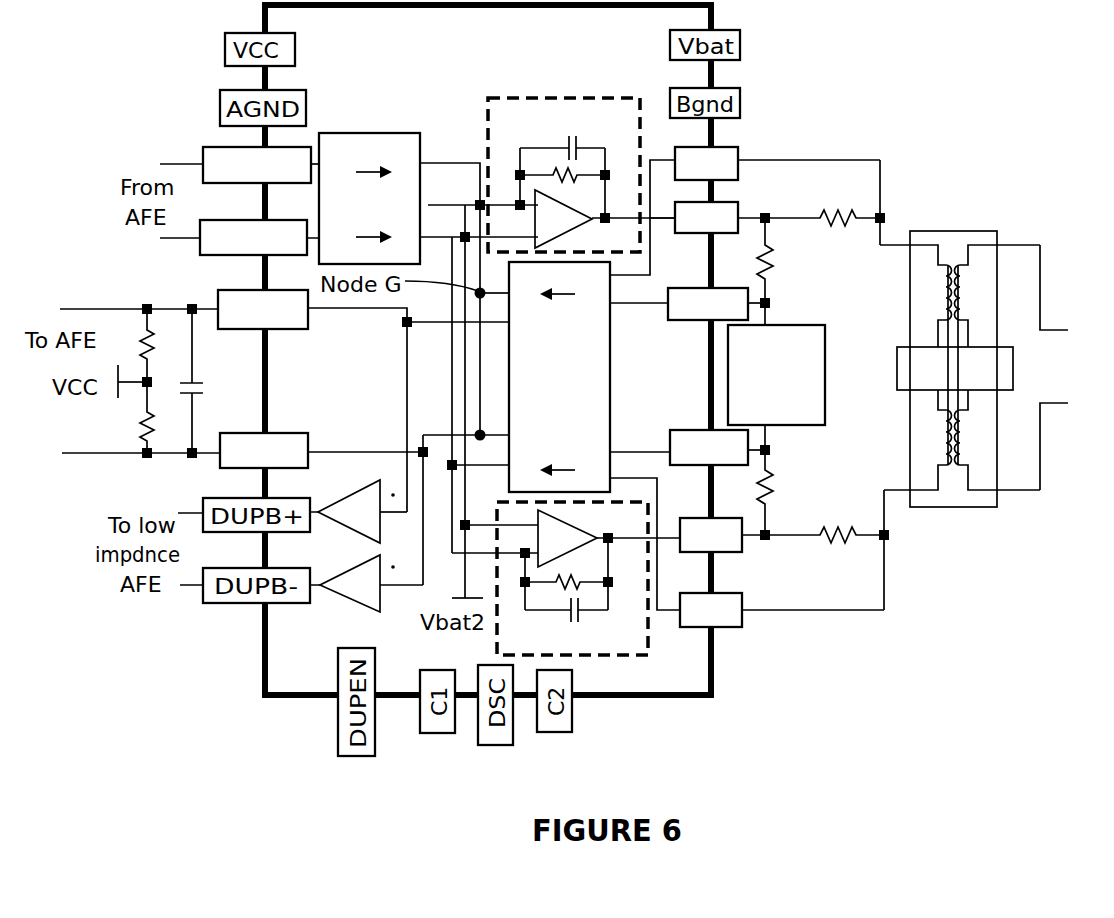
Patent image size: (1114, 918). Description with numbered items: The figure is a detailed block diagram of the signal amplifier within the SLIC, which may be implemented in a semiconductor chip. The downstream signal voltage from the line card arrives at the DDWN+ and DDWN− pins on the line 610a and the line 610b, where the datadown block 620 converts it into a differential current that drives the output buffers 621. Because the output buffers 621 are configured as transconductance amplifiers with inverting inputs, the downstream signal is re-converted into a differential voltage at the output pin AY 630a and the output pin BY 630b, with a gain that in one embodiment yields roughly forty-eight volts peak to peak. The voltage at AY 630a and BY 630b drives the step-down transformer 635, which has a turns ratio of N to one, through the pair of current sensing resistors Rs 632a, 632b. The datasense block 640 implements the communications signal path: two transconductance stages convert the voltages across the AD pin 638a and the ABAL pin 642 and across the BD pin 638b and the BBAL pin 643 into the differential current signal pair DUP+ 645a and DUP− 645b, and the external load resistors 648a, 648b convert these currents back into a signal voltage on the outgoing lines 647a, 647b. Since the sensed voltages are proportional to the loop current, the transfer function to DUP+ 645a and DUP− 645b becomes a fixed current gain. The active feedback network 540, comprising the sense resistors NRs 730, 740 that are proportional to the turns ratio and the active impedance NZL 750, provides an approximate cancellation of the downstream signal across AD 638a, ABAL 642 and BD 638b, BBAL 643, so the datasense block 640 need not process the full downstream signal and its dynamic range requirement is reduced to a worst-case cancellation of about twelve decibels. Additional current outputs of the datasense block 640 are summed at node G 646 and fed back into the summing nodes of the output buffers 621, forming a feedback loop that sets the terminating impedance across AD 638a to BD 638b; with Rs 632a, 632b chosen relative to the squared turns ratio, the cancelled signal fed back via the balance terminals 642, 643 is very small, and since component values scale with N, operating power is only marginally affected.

The line 610a is at (203, 160).
The line 610b is at (197, 240).
The datadown block 620 is at (350, 133).
The output buffers 621 is at (555, 98).
The output pin AY 630a is at (685, 233).
The output pin BY 630b is at (725, 552).
The current sensing resistor Rs 632a is at (838, 215).
The current sensing resistor Rs 632b is at (843, 547).
The step-down transformer 635 is at (920, 231).
The AD pin 638a is at (735, 147).
The BD pin 638b is at (745, 618).
The datasense block 640 is at (580, 444).
The ABAL pin 642 is at (695, 320).
The BBAL pin 643 is at (690, 430).
The DUP+ differential current signal 645a is at (290, 330).
The DUP− differential current signal 645b is at (290, 433).
The node G 646 is at (476, 296).
The AFE output line 647a is at (115, 308).
The AFE output line 647b is at (95, 456).
The external load resistor 648a is at (160, 330).
The external load resistor 648b is at (140, 428).
The resistor NRs 730 is at (770, 272).
The resistor NRs 740 is at (770, 480).
The active impedance NZL 750 is at (825, 375).
The active feedback network 540 is at (819, 397).